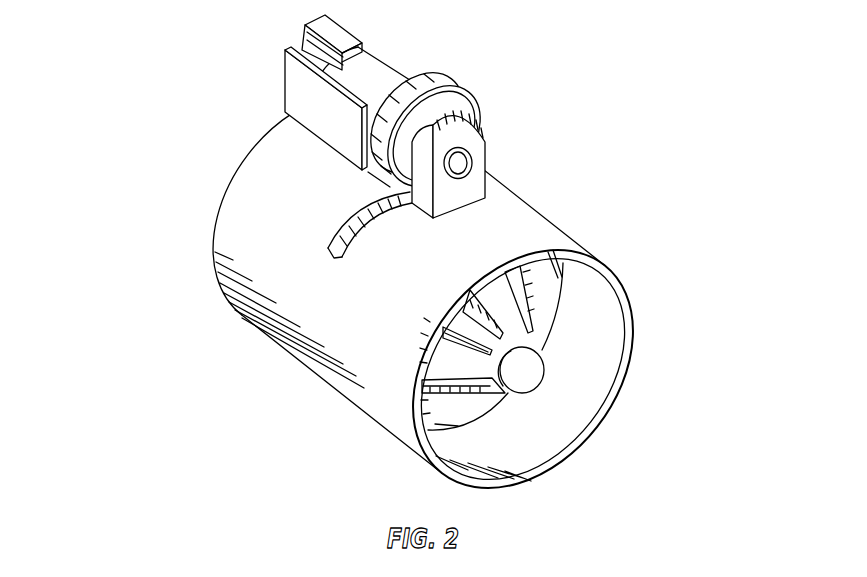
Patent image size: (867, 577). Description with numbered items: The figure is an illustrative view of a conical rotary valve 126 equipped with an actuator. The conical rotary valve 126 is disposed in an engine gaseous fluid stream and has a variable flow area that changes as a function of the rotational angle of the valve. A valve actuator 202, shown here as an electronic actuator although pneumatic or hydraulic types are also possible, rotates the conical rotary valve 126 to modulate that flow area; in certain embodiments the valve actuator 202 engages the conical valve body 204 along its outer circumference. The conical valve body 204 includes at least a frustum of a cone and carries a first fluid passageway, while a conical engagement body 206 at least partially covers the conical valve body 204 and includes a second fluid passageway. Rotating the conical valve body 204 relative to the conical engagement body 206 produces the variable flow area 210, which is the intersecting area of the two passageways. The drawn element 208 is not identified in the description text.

The conical rotary valve 126 is at (172, 154).
The valve actuator 202 is at (377, 62).
The conical valve body 204 is at (461, 306).
The conical engagement body 206 is at (523, 372).
The flange 208 is at (437, 92).
The variable flow area 210 is at (455, 320).